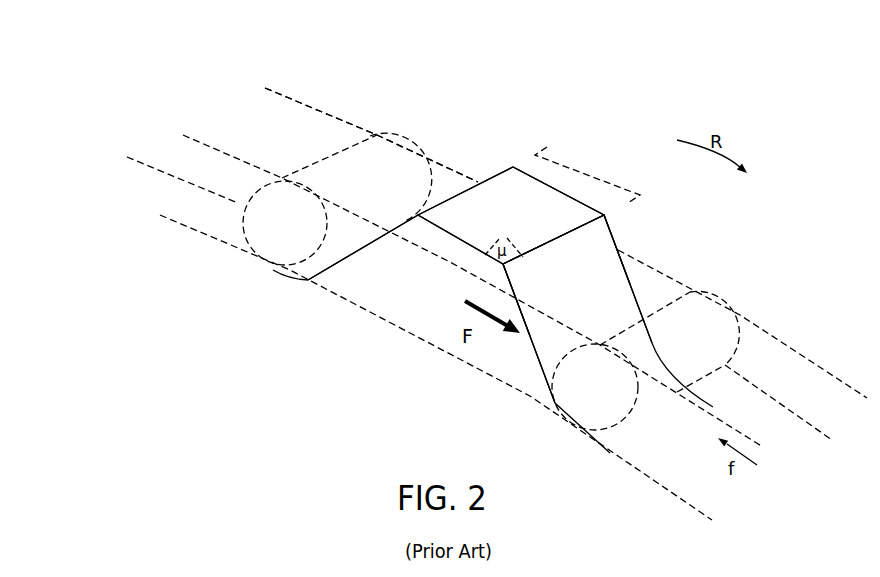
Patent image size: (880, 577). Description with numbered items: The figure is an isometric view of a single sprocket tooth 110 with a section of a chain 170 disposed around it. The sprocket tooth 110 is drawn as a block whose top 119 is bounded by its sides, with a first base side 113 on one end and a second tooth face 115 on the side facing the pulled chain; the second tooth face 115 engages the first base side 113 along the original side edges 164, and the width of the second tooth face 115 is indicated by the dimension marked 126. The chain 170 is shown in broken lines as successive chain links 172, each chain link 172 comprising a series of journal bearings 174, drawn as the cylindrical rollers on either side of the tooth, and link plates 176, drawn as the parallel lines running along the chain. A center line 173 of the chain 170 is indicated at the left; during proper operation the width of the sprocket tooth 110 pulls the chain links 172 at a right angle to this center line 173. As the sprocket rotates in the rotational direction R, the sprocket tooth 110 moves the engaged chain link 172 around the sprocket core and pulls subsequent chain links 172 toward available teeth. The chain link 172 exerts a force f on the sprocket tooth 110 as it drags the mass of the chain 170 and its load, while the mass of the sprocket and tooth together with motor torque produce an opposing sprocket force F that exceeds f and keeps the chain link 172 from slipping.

The sprocket tooth 110 is at (512, 134).
The first base side 113 is at (430, 237).
The second tooth face 115 is at (607, 323).
The top 119 is at (523, 220).
The blade thickness 126 is at (587, 174).
The original side edges 164 is at (613, 238).
The chain 170 is at (292, 55).
The chain link 172 is at (444, 137).
The center line 173 is at (142, 163).
The journal bearings 174 is at (267, 244).
The link plates 176 is at (398, 318).